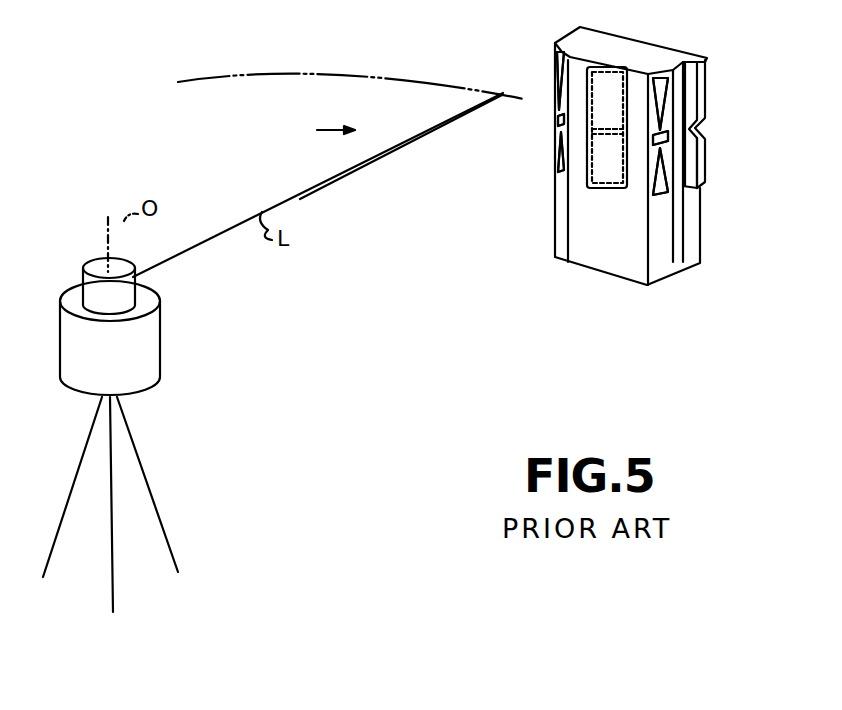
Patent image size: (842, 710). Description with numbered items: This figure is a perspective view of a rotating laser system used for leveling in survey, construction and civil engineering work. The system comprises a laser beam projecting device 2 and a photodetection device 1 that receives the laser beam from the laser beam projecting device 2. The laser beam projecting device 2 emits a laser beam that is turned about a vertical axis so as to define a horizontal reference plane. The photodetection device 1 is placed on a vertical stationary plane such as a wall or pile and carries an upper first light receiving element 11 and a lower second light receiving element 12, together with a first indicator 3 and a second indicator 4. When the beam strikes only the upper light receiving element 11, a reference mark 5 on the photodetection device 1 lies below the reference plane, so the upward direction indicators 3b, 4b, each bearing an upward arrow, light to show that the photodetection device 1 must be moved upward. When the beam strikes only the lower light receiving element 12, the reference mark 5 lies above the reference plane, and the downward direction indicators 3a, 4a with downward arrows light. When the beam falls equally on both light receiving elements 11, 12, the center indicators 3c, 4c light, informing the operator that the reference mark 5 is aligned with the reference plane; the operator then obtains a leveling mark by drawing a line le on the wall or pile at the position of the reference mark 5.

The photodetection device 1 is at (605, 270).
The first light receiving element 11 is at (605, 82).
The second light receiving element 12 is at (607, 170).
The laser beam projecting device 2 is at (145, 348).
The first indicator 3 is at (660, 250).
The downward direction indicator 3a is at (664, 78).
The upward direction indicator 3b is at (670, 190).
The center indicator 3c is at (665, 132).
The second indicator 4 is at (556, 148).
The downward direction indicator 4a is at (555, 68).
The upward direction indicator 4b is at (556, 180).
The center indicator 4c is at (556, 122).
The reference mark 5 is at (700, 125).
The line le is at (710, 138).